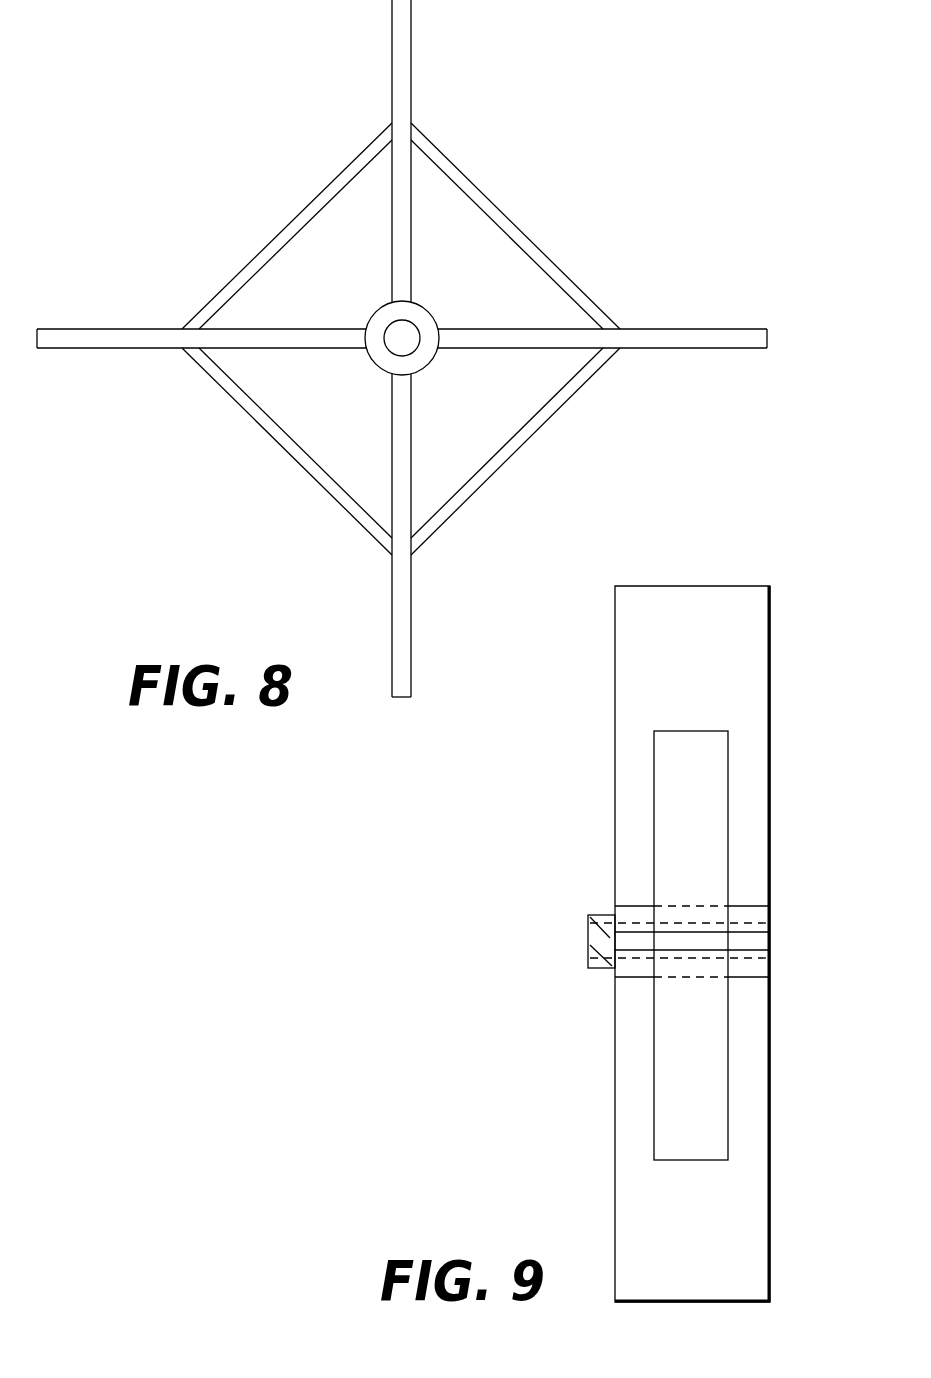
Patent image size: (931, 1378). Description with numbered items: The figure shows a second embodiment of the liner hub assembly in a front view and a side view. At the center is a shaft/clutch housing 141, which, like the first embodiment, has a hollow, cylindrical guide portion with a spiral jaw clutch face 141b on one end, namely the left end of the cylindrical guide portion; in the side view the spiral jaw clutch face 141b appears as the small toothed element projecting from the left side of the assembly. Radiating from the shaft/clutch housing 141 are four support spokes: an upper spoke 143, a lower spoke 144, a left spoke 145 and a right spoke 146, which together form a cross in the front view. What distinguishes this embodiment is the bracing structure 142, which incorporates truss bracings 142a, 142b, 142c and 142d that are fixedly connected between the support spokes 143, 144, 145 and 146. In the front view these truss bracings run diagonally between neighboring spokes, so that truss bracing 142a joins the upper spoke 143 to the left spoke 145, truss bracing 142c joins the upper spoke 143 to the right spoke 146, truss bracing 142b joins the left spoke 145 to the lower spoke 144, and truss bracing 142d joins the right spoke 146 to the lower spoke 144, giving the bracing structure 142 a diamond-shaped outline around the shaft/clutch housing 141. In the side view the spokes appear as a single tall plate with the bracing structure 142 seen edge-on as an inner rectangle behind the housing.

In FIG. 8, the shaft/clutch housing 141 is at (427, 308).
In FIG. 9, the shaft/clutch housing 141 is at (770, 922).
In FIG. 9, the spiral jaw clutch face 141b is at (587, 932).
In FIG. 8, the bracing structure 142 is at (388, 328).
In FIG. 9, the bracing structure 142 is at (728, 807).
In FIG. 8, the truss bracing 142a is at (295, 217).
In FIG. 8, the truss bracing 142b is at (333, 500).
In FIG. 8, the truss bracing 142c is at (580, 285).
In FIG. 8, the truss bracing 142d is at (508, 462).
In FIG. 8, the upper spoke 143 is at (412, 58).
In FIG. 9, the upper spoke 143 is at (772, 702).
In FIG. 8, the lower spoke 144 is at (412, 645).
In FIG. 9, the lower spoke 144 is at (770, 1255).
In FIG. 8, the left spoke 145 is at (150, 328).
In FIG. 8, the right spoke 146 is at (750, 328).
In FIG. 9, the right spoke 146 is at (745, 952).